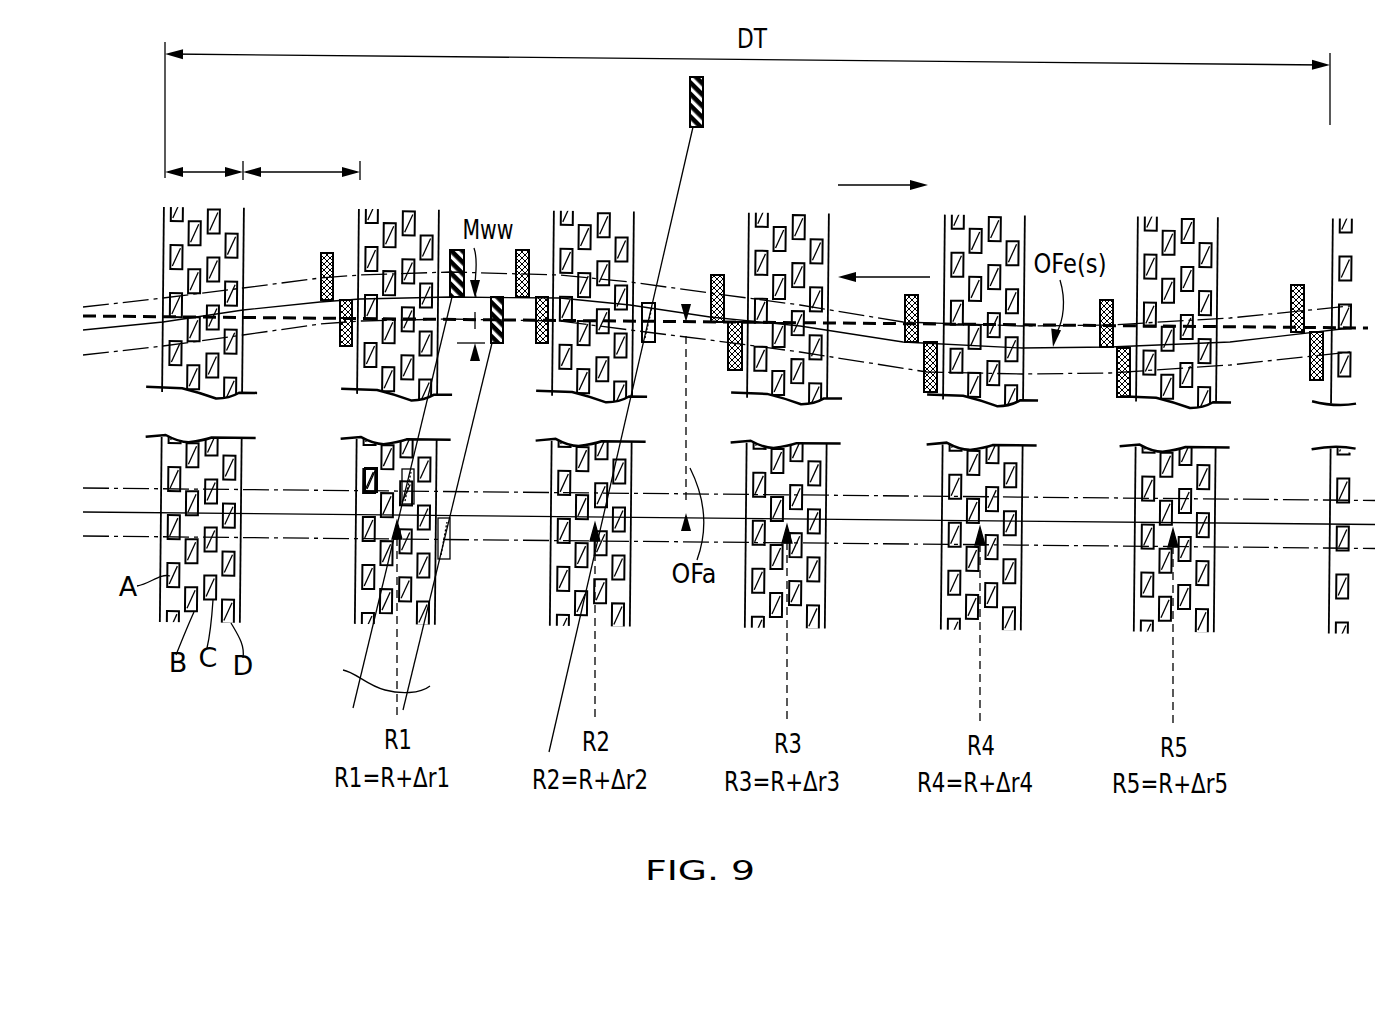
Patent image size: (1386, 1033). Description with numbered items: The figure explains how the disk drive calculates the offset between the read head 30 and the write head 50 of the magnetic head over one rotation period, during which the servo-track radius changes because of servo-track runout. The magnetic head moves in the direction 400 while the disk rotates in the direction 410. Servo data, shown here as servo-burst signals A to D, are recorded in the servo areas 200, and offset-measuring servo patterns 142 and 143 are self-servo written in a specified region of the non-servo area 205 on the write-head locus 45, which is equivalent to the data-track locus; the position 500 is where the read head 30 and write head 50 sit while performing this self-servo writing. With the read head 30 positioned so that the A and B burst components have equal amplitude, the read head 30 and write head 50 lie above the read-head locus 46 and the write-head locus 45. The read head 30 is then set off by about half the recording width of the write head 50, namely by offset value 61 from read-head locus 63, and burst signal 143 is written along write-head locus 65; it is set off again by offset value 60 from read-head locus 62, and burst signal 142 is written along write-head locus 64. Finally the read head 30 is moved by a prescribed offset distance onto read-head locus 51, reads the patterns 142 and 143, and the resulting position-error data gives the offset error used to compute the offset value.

The read head 30 is at (649, 342).
The write-head locus 45 is at (104, 328).
The read-head locus 46 is at (113, 513).
The write head 50 is at (704, 100).
The read-head locus 51 is at (675, 316).
The offset value 60 is at (413, 495).
The offset value 61 is at (455, 536).
The read-head locus 62 is at (128, 489).
The read-head locus 63 is at (128, 537).
The write-head locus 64 is at (128, 300).
The write-head locus 65 is at (128, 350).
The servo pattern 142 is at (327, 253).
The servo pattern 143 is at (343, 347).
The servo area 200 is at (204, 157).
The non-servo area 205 is at (301, 157).
The direction in which the magnetic head moves 400 is at (884, 261).
The direction in which the disk rotates 410 is at (883, 169).
The position of the read head and write head during self-servo writing 500 is at (385, 693).